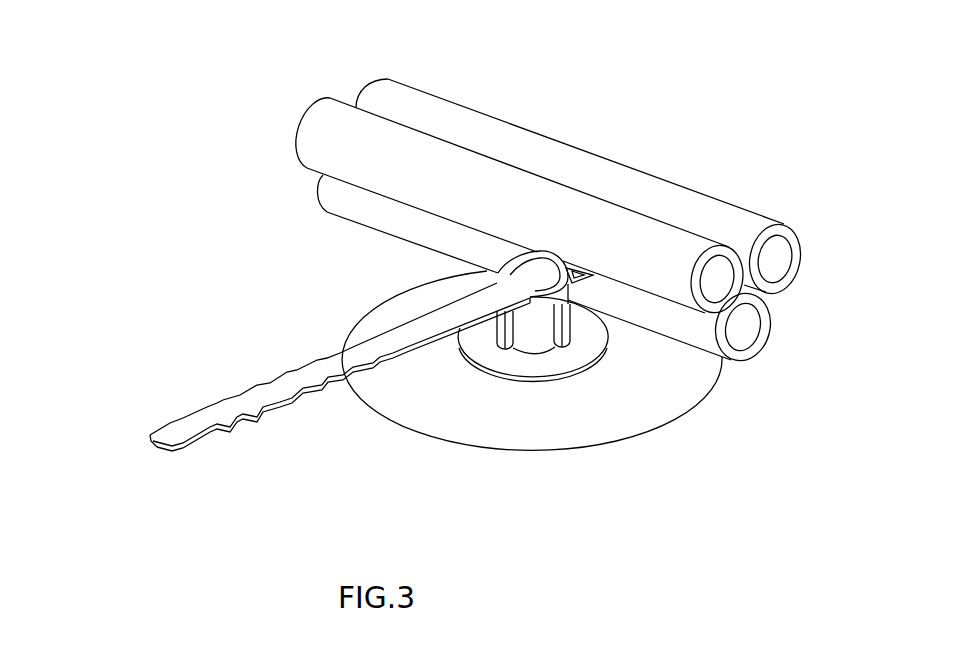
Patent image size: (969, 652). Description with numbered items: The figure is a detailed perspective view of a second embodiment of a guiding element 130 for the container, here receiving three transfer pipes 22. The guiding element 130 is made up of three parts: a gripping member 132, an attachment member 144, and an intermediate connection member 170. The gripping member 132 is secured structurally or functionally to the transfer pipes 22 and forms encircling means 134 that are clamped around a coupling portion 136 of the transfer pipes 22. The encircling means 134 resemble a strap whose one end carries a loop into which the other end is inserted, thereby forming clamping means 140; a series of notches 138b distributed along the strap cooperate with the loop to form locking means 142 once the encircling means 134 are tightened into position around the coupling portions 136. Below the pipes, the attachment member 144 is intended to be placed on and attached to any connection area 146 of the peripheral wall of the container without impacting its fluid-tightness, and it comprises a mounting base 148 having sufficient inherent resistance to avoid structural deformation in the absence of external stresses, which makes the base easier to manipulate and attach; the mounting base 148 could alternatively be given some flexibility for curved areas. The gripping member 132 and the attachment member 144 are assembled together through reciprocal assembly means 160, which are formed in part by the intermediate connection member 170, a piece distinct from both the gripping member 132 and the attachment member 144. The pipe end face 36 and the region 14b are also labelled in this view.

The transfer pipes 22 is at (708, 185).
The tube 36 is at (592, 189).
The boss 14b is at (600, 363).
The attachment member 144 is at (571, 357).
The connection area 146 is at (600, 400).
The mounting base 148 is at (532, 378).
The intermediate connection member 170 is at (543, 330).
The reciprocal assembly means 160 is at (545, 300).
The guiding element 130 is at (273, 320).
The clamping means 140 is at (328, 320).
The coupling portion 136 is at (247, 360).
The encircling means 134 is at (340, 410).
The gripping member 132 is at (340, 410).
The notches 138b is at (309, 403).
The locking means 142 is at (340, 367).